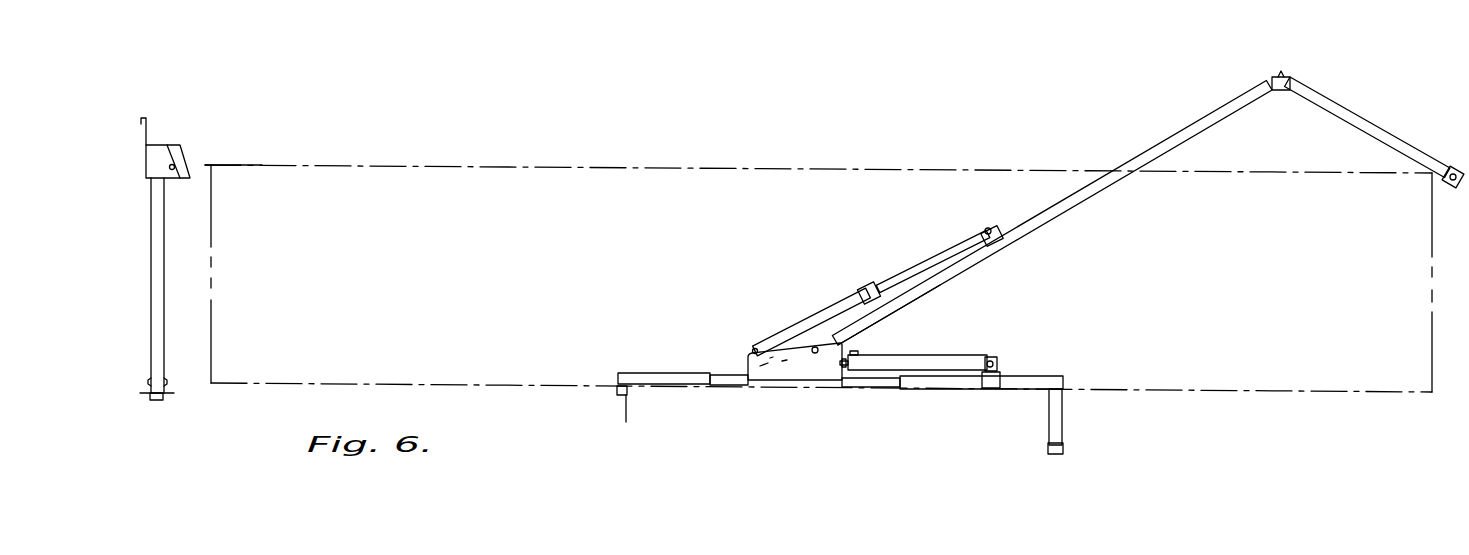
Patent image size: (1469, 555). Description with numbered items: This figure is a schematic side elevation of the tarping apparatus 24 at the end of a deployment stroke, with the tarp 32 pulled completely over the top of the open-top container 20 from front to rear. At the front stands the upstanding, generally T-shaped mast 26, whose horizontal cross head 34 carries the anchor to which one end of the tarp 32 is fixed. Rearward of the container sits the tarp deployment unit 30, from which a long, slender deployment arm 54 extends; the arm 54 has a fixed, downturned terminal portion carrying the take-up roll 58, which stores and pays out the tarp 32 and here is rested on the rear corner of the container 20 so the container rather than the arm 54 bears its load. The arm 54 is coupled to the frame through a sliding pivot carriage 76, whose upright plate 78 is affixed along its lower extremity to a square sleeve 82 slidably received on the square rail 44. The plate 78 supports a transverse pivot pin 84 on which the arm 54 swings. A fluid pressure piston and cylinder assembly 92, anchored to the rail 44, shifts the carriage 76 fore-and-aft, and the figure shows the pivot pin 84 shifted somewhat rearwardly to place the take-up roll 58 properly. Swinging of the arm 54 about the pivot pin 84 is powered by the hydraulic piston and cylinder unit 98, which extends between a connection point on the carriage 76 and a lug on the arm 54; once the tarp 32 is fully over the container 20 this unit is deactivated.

The container 20 is at (638, 197).
The tarping apparatus 24 is at (1368, 111).
The mast 26 is at (177, 218).
The tarp deployment unit 30 is at (859, 273).
The tarp 32 is at (205, 165).
The cross head 34 is at (153, 172).
The rail 44 is at (868, 399).
The deployment arm 54 is at (1048, 213).
The take-up roll 58 is at (1434, 158).
The sliding pivot carriage 76 is at (860, 343).
The plate 78 is at (832, 393).
The sleeve 82 is at (728, 382).
The pivot pin 84 is at (818, 354).
The piston and cylinder assembly 92 is at (968, 362).
The hydraulic piston and cylinder unit 98 is at (815, 327).